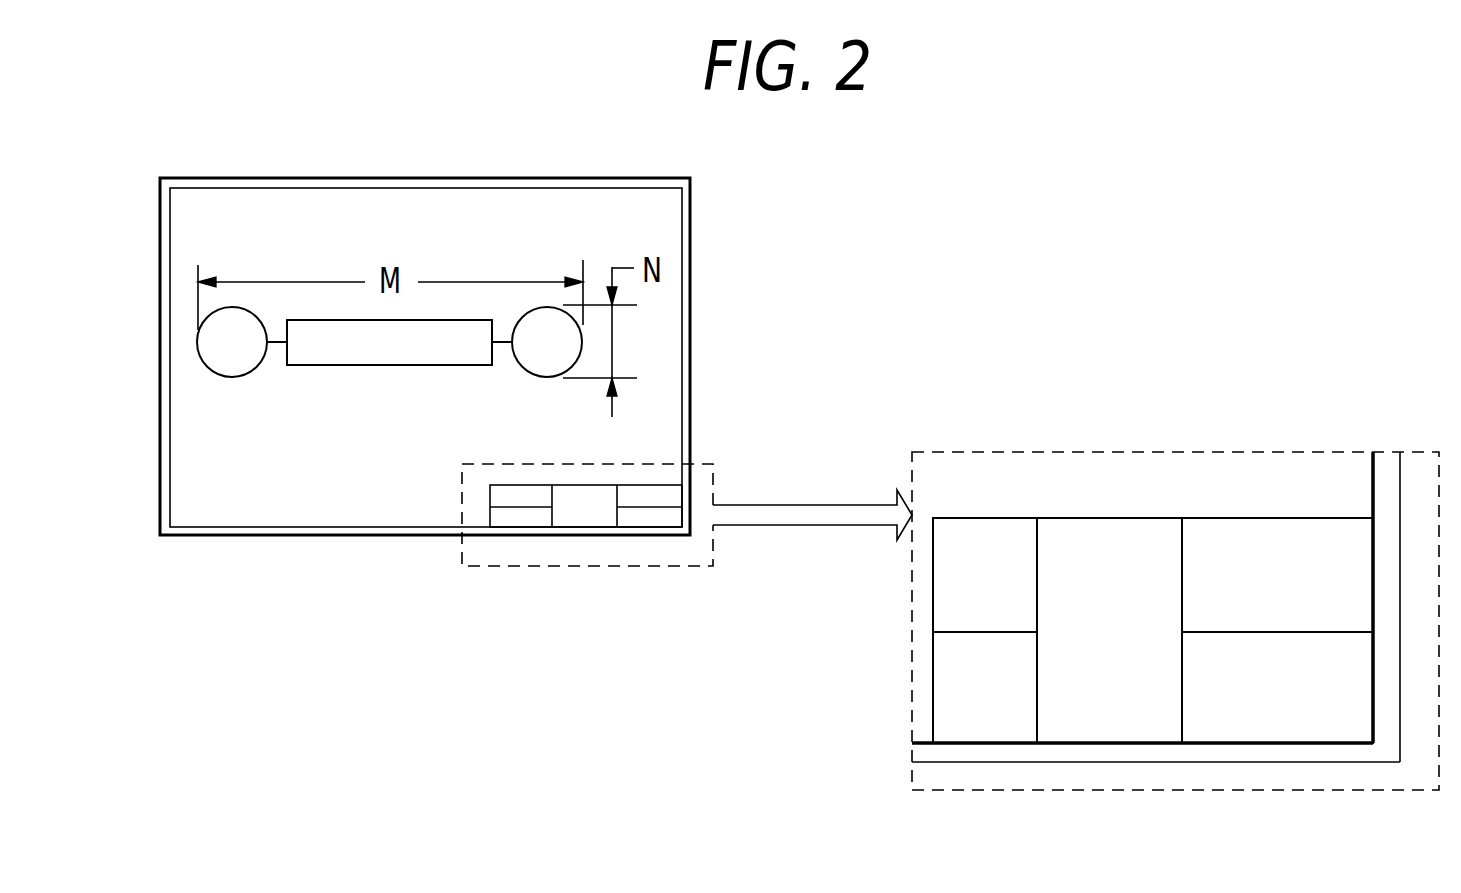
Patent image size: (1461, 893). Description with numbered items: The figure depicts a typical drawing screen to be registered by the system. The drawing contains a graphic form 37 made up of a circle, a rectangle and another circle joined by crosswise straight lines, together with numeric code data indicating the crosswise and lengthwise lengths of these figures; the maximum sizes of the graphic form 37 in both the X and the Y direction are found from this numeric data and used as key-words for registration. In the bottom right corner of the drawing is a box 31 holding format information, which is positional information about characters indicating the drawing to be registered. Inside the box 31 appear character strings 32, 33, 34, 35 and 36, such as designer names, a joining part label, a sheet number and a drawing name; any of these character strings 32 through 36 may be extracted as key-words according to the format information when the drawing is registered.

The box 31 is at (1157, 518).
The character string 32 is at (1007, 540).
The character string 33 is at (989, 727).
The character string 34 is at (1070, 537).
The character string 35 is at (1337, 538).
The character string 36 is at (1251, 727).
The graphic form 37 is at (322, 366).